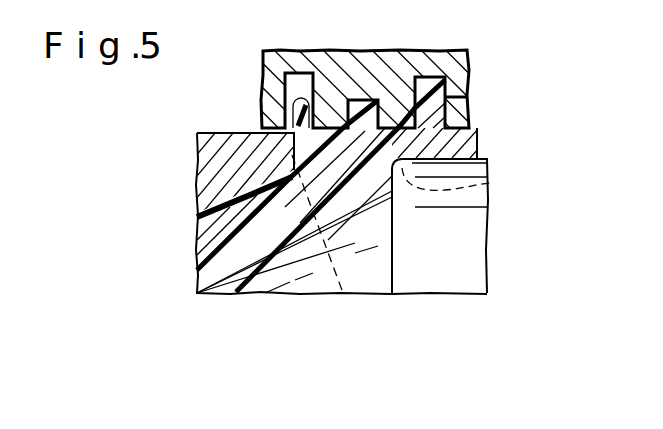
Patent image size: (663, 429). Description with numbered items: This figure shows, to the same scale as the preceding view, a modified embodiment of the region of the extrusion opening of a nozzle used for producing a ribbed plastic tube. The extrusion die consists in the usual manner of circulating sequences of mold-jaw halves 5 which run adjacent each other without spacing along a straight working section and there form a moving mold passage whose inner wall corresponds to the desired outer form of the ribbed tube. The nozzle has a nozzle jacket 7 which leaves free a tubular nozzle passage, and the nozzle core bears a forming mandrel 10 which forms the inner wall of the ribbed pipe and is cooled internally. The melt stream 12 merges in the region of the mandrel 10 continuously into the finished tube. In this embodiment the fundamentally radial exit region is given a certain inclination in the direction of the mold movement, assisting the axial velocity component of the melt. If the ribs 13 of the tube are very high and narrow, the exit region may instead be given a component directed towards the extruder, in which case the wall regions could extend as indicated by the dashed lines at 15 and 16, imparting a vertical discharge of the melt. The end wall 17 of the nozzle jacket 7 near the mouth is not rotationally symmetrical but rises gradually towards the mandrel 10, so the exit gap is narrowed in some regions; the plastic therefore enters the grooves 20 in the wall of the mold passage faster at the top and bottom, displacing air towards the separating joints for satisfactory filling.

The mold-jaw halves 5 is at (357, 63).
The nozzle jacket 7 is at (214, 172).
The forming mandrel 10 is at (470, 235).
The melt stream 12 is at (212, 245).
The ribs 13 is at (428, 85).
The dashed-line wall region 15 is at (283, 155).
The dashed-line wall region 16 is at (490, 183).
The end wall 17 is at (332, 265).
The grooves 20 is at (294, 88).